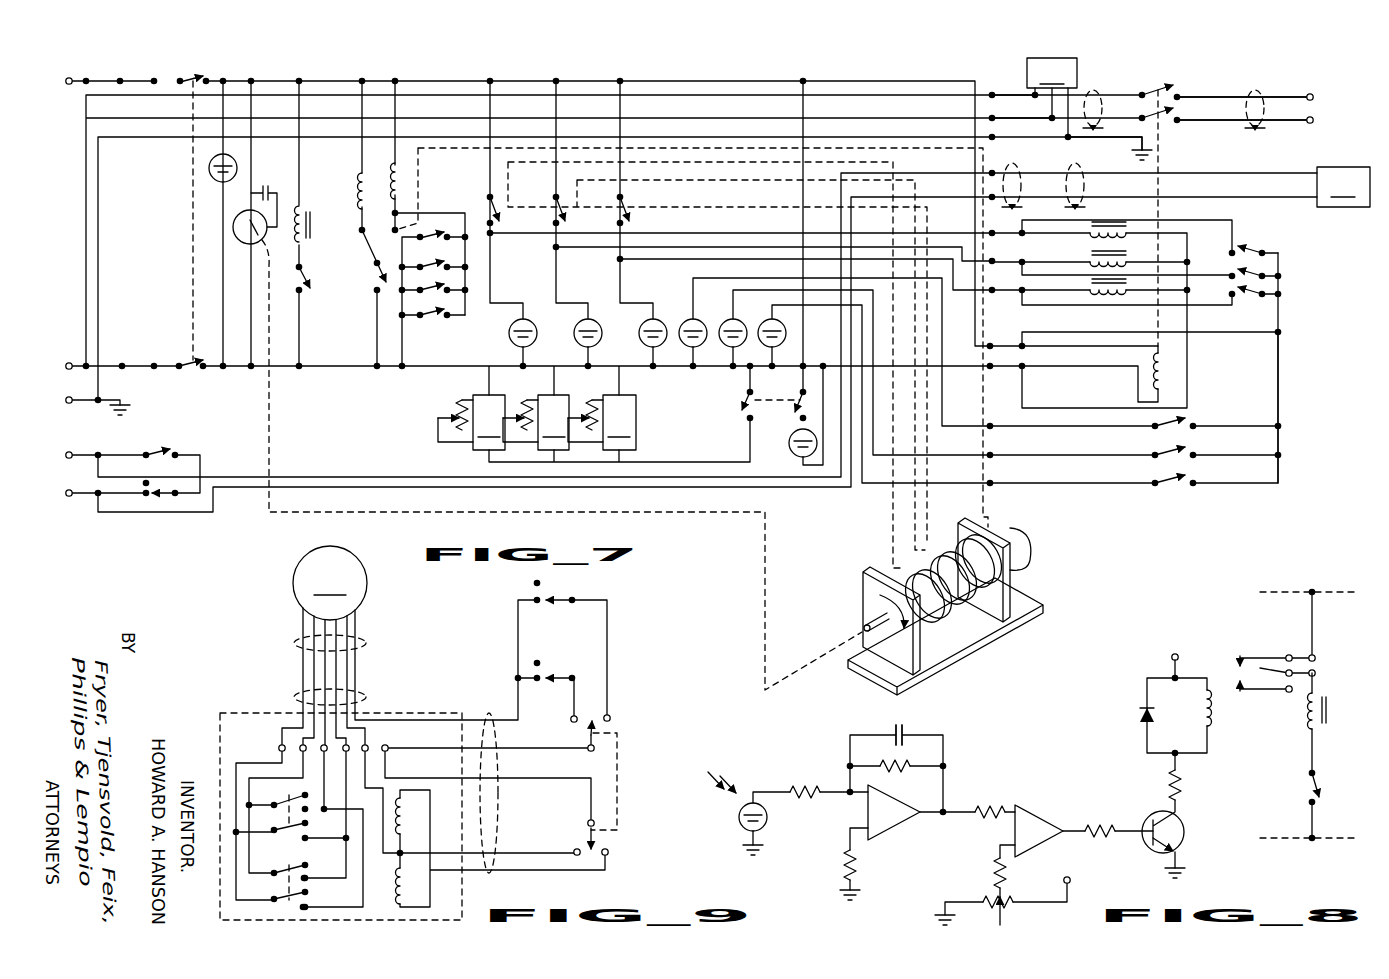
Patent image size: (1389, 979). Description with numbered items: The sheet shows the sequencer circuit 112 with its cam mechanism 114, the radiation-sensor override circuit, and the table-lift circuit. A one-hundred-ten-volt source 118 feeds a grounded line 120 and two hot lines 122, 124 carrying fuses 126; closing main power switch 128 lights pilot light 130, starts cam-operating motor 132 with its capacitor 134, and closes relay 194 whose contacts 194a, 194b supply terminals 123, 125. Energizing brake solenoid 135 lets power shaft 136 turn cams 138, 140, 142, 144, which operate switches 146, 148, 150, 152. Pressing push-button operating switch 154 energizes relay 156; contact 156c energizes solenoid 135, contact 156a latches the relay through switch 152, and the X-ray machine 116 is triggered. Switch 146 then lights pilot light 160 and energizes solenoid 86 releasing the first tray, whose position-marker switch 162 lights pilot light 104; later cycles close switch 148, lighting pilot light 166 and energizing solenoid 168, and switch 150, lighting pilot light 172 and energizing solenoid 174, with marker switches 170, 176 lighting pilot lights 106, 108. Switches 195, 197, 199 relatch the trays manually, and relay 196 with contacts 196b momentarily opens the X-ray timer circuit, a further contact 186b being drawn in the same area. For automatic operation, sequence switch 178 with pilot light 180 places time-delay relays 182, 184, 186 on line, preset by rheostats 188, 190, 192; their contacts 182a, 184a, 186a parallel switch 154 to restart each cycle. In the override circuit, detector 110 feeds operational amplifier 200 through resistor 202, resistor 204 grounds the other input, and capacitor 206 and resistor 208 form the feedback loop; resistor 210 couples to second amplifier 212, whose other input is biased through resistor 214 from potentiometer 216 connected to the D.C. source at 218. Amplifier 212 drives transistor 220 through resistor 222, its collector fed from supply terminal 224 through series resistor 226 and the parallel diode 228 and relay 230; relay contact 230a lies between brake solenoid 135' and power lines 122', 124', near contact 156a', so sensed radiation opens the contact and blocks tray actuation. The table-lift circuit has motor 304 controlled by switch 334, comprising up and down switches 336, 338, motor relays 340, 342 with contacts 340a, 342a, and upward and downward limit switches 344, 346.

In FIG. 7, the fuses 126 is at (141, 79).
In FIG. 7, the main power switch 128 is at (193, 271).
In FIG. 7, the main power pilot light 130 is at (208, 168).
In FIG. 7, the cam-operating motor 132 is at (233, 227).
In FIG. 7, the capacitor 134 is at (264, 191).
In FIG. 7, the power shaft 136 is at (262, 253).
In FIG. 7, the brake solenoid 135 is at (317, 238).
In FIG. 7, the relay contact 156c is at (324, 285).
In FIG. 7, the relay 196 is at (357, 192).
In FIG. 7, the relay 156 is at (400, 186).
In FIG. 7, the push-button operating switch 154 is at (432, 233).
In FIG. 7, the cam-actuated switch 152 is at (360, 256).
In FIG. 7, the relay contact 156a is at (358, 328).
In FIG. 7, the relay contact 182a is at (448, 262).
In FIG. 7, the relay contact 184a is at (448, 287).
In FIG. 7, the relay contact 186a is at (448, 312).
In FIG. 7, the cam-operated switch 146 is at (496, 206).
In FIG. 7, the cam-operated switch 148 is at (562, 210).
In FIG. 7, the cam-operated switch 150 is at (625, 200).
In FIG. 7, the pilot light 160 is at (509, 335).
In FIG. 7, the pilot light 166 is at (592, 318).
In FIG. 7, the pilot light 172 is at (650, 318).
In FIG. 7, the pilot light 104 is at (688, 320).
In FIG. 7, the pilot light 106 is at (728, 320).
In FIG. 7, the pilot light 108 is at (766, 320).
In FIG. 7, the time-delay relay 182 is at (489, 422).
In FIG. 7, the time-delay relay 184 is at (554, 422).
In FIG. 7, the time-delay relay 186 is at (619, 422).
In FIG. 7, the rheostat means 188 is at (451, 416).
In FIG. 7, the rheostat means 190 is at (516, 412).
In FIG. 7, the rheostat means 192 is at (581, 412).
In FIG. 7, the automatic sequence switch 178 is at (748, 402).
In FIG. 7, the pilot light 180 is at (790, 440).
In FIG. 7, the relay contact 186b is at (158, 450).
In FIG. 7, the relay contacts 196b is at (166, 497).
In FIG. 7, the hot line 122 is at (1010, 81).
In FIG. 7, the hot line 124 is at (1022, 112).
In FIG. 7, the grounded line 120 is at (1020, 140).
In FIG. 7, the 110-volt source 118 is at (1052, 73).
In FIG. 7, the relay contact 194a is at (1143, 92).
In FIG. 7, the relay contact 194b is at (1167, 115).
In FIG. 7, the terminal 123 is at (1315, 97).
In FIG. 9, the terminal 123 is at (367, 746).
In FIG. 7, the terminal 125 is at (1315, 120).
In FIG. 9, the terminal 125 is at (388, 748).
In FIG. 7, the X-ray machine 116 is at (1343, 187).
In FIG. 7, the solenoid 86 is at (1122, 234).
In FIG. 7, the solenoid 168 is at (1090, 262).
In FIG. 7, the solenoid 174 is at (1092, 294).
In FIG. 7, the switch 195 is at (1262, 250).
In FIG. 7, the switch 197 is at (1270, 276).
In FIG. 7, the switch 199 is at (1270, 295).
In FIG. 7, the relay 194 is at (1155, 366).
In FIG. 7, the sequencer circuit 112 is at (1292, 357).
In FIG. 7, the push-button position-marker switch 162 is at (1175, 425).
In FIG. 7, the push-button position-marker switch 170 is at (1175, 454).
In FIG. 7, the push-button marker switch 176 is at (1175, 483).
In FIG. 7, the cam mechanism 114 is at (1052, 595).
In FIG. 7, the cam 138 is at (940, 622).
In FIG. 7, the cam 140 is at (953, 605).
In FIG. 7, the cam 142 is at (977, 590).
In FIG. 7, the cam 144 is at (1025, 555).
In FIG. 9, the motor 304 is at (330, 583).
In FIG. 9, the relay contact 340a is at (302, 795).
In FIG. 9, the relay contact 342a is at (280, 870).
In FIG. 9, the motor relay 340 is at (405, 813).
In FIG. 9, the motor relay 342 is at (396, 886).
In FIG. 9, the downward limit switch 346 is at (560, 598).
In FIG. 9, the upward limit switch 344 is at (552, 677).
In FIG. 9, the switch 336 is at (597, 729).
In FIG. 9, the switch 334 is at (618, 781).
In FIG. 9, the switch 338 is at (597, 838).
In FIG. 8, the radiation sensor 110 is at (739, 819).
In FIG. 8, the resistor 202 is at (808, 802).
In FIG. 8, the operational amplifier 200 is at (883, 827).
In FIG. 8, the resistor 204 is at (853, 868).
In FIG. 8, the capacitor 206 is at (904, 725).
In FIG. 8, the resistor 208 is at (892, 772).
In FIG. 8, the resistor 210 is at (978, 811).
In FIG. 8, the second amplifier 212 is at (1038, 823).
In FIG. 8, the resistor 214 is at (997, 875).
In FIG. 8, the slide wire potentiometer 216 is at (1008, 900).
In FIG. 8, the D.C. power source 218 is at (1072, 879).
In FIG. 8, the resistor 222 is at (1097, 827).
In FIG. 8, the transistor 220 is at (1185, 828).
In FIG. 8, the series resistor 226 is at (1182, 792).
In FIG. 8, the supply terminal 224 is at (1179, 652).
In FIG. 8, the diode 228 is at (1140, 716).
In FIG. 8, the relay 230 is at (1215, 717).
In FIG. 8, the relay contact 230a is at (1260, 668).
In FIG. 8, the power line 122' is at (1308, 633).
In FIG. 8, the brake solenoid 135' is at (1336, 723).
In FIG. 8, the relay contact 156a' is at (1287, 788).
In FIG. 8, the power line 124' is at (1313, 820).